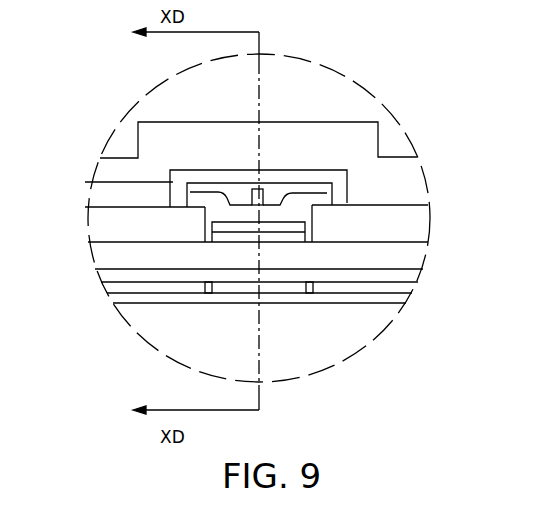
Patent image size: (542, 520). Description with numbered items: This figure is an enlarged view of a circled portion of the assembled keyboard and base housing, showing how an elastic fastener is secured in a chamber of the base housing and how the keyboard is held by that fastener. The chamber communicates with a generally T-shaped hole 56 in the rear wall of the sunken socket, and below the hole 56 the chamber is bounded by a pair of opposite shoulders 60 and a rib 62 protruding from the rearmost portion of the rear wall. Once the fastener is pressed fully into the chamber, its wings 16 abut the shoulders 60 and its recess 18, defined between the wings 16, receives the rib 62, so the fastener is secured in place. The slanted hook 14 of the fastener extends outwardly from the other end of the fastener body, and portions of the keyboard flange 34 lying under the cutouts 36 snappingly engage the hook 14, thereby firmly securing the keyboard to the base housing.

The slanted hook 14 is at (230, 291).
The wings 16 is at (105, 183).
The recess 18 is at (282, 200).
The flange 34 is at (108, 290).
The cutouts 36 is at (198, 292).
The T-shaped holes 56 is at (268, 228).
The shoulders 60 is at (205, 207).
The rib 62 is at (248, 200).